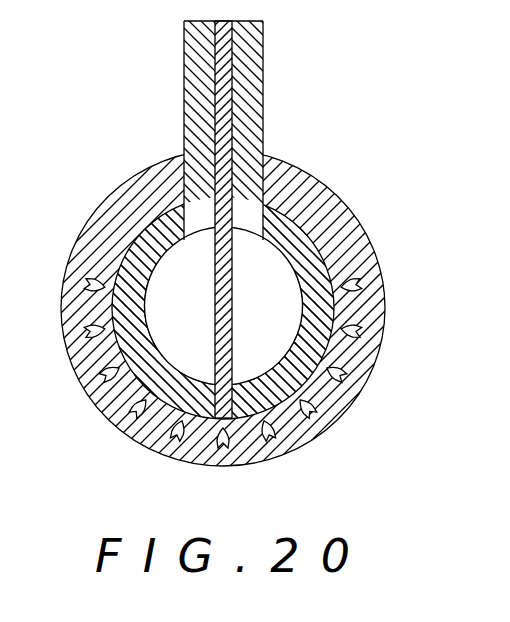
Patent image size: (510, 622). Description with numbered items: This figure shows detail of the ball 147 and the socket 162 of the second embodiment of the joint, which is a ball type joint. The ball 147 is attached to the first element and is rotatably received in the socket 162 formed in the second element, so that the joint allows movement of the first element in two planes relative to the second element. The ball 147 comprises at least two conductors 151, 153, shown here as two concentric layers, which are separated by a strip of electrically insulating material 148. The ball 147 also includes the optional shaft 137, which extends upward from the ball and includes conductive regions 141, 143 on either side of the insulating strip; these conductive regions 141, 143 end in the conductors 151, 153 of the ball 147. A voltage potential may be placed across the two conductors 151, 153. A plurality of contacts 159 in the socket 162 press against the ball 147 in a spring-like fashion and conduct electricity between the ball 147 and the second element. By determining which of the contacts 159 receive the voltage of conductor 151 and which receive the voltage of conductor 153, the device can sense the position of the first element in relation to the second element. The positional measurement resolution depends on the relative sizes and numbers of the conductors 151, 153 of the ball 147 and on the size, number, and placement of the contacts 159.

The shaft 137 is at (255, 245).
The conductive region 141 is at (184, 102).
The conductive region 143 is at (263, 108).
The ball 147 is at (255, 245).
The strip of electrically insulating material 148 is at (223, 53).
The conductor 151 is at (142, 228).
The conductor 153 is at (300, 229).
The contacts 159 is at (346, 370).
The socket 162 is at (343, 413).